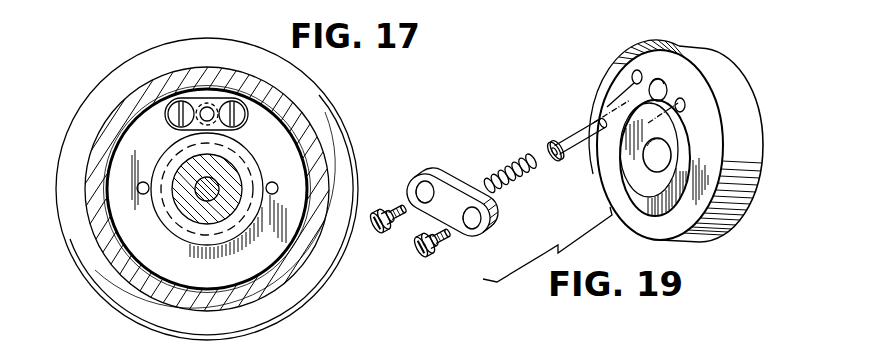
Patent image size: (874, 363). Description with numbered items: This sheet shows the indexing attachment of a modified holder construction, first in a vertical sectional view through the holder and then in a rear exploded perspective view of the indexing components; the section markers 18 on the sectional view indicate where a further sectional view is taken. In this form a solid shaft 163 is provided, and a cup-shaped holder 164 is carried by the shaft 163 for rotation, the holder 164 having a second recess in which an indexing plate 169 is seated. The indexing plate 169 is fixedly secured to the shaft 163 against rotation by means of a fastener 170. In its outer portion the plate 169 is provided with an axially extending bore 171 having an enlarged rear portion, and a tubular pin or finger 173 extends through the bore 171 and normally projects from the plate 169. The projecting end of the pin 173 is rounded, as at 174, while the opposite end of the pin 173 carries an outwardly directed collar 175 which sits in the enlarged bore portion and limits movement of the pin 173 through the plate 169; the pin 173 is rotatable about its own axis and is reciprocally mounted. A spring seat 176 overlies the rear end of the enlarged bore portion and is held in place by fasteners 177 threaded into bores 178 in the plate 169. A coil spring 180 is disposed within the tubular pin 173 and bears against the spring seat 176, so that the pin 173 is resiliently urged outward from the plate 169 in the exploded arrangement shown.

In FIG. 17, the section line 18- 18 is at (78, 115).
In FIG. 17, the solid shaft 163 is at (208, 216).
In FIG. 17, the cup-shaped holder 164 is at (315, 97).
In FIG. 17, the indexing plate 169 is at (270, 253).
In FIG. 19, the indexing plate 169 is at (731, 108).
In FIG. 17, the fastener 170 is at (212, 183).
In FIG. 19, the bore 171 is at (662, 83).
In FIG. 19, the tubular pin 173 is at (600, 120).
In FIG. 19, the rounded end 174 is at (598, 112).
In FIG. 17, the collar 175 is at (209, 108).
In FIG. 19, the collar 175 is at (563, 158).
In FIG. 17, the spring seat 176 is at (232, 128).
In FIG. 19, the spring seat 176 is at (446, 178).
In FIG. 17, the fasteners 177 is at (172, 116).
In FIG. 19, the fasteners 177 is at (418, 257).
In FIG. 19, the bores 178 is at (632, 74).
In FIG. 19, the coil spring 180 is at (522, 160).